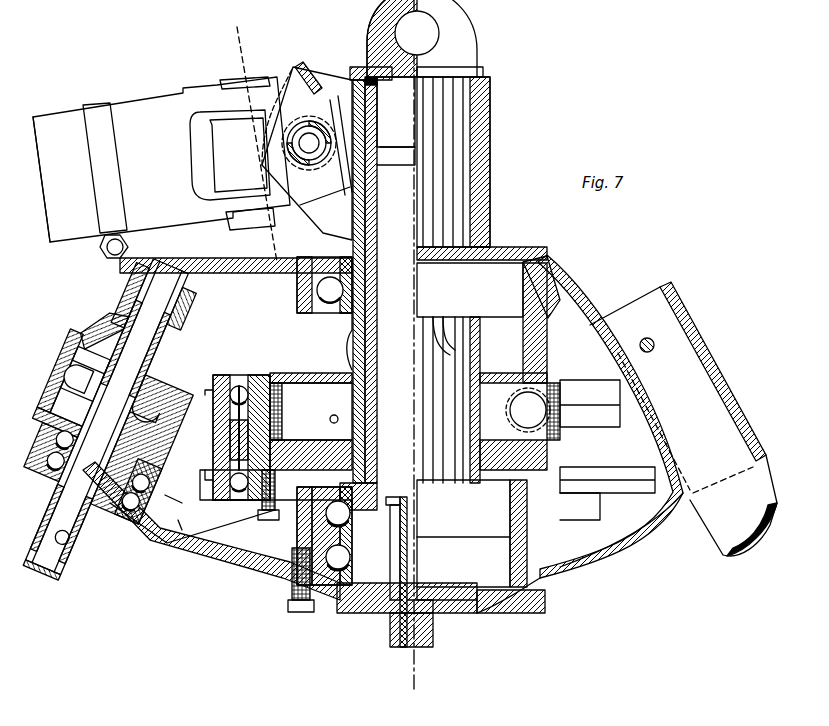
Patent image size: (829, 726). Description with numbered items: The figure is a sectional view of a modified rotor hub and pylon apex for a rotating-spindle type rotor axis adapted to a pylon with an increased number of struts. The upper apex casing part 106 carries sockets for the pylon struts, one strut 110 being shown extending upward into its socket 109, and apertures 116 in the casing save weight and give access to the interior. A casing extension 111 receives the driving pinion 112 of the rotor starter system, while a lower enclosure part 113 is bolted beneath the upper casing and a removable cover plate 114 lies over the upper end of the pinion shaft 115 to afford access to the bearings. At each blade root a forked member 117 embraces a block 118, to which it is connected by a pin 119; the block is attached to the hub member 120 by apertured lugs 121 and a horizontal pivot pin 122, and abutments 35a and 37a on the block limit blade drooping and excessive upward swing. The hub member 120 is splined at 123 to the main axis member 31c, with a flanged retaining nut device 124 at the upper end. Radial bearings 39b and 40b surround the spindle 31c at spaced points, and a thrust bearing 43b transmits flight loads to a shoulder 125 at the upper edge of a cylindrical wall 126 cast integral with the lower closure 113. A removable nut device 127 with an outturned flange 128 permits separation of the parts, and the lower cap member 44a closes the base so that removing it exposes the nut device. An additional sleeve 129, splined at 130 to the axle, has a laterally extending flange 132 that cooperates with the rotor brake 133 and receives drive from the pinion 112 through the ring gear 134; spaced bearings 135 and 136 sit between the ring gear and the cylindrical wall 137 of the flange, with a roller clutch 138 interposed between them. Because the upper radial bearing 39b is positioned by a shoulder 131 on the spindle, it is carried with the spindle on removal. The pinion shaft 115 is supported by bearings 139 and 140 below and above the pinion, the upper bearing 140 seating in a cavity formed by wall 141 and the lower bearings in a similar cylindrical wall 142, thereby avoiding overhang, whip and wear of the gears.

The block 118 is at (212, 145).
The forked member 117 is at (198, 95).
The pin 119 is at (257, 137).
The abutment 37a is at (297, 68).
The horizontal pivot pin 122 is at (309, 143).
The stop member abutment 35a is at (340, 215).
The removable cover plate 114 is at (228, 262).
The flanged retaining nut device 124 is at (378, 30).
The apertured lugs 121 is at (352, 98).
The main axis member 31c is at (370, 205).
The splines 123 is at (450, 140).
The hub member 120 is at (480, 228).
The upper radial bearing 39b is at (342, 290).
The sleeve 129 is at (352, 355).
The shoulder 131 is at (355, 318).
The flange 132 is at (305, 455).
The cylindrical wall 137 is at (278, 425).
The rotor brake 133 is at (255, 378).
The bearing 135 is at (239, 390).
The cylindrical wall 141 is at (250, 345).
The shoulder 125 is at (270, 515).
The cylindrical wall 126 is at (270, 520).
The thrust bearing 43b is at (375, 497).
The lower radial bearing 40b is at (340, 570).
The removable nut device 127 is at (395, 615).
The outturned flange 128 is at (372, 600).
The cap member 44a is at (470, 613).
The splines 130 is at (470, 350).
The upper apex casing part 106 is at (580, 320).
The aperture 116 is at (612, 568).
The socket 109 is at (685, 305).
The strut 110 is at (715, 555).
The lower enclosure part 113 is at (262, 580).
The bearing 136 is at (190, 512).
The ring gear 134 is at (175, 510).
The roller clutch 138 is at (182, 540).
The pinion shaft 115 is at (121, 422).
The upper bearing 140 is at (133, 296).
The casing extension 111 is at (82, 313).
The driving pinion 112 is at (57, 374).
The lower bearing 139 is at (41, 438).
The cylindrical wall 142 is at (143, 472).